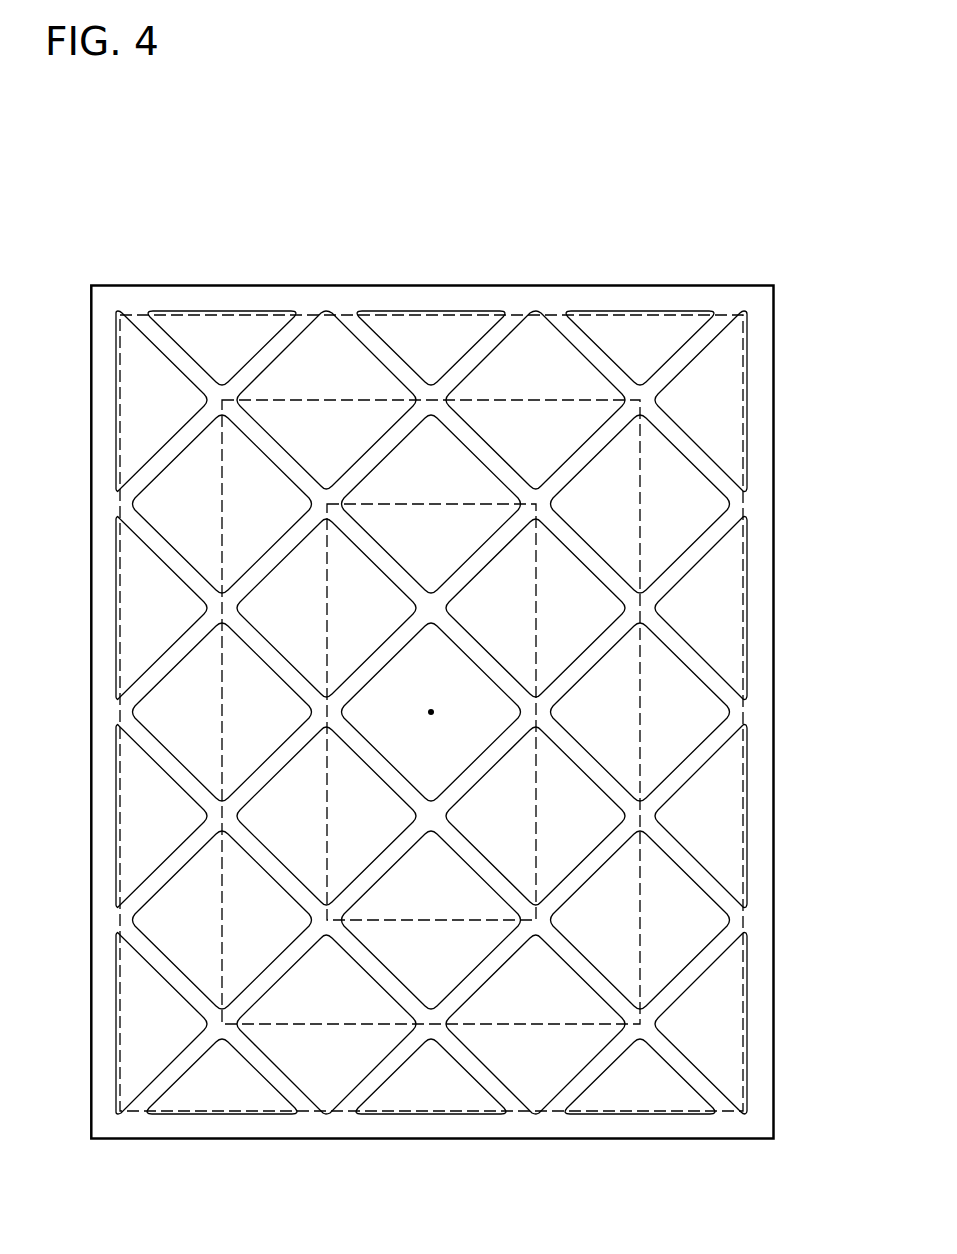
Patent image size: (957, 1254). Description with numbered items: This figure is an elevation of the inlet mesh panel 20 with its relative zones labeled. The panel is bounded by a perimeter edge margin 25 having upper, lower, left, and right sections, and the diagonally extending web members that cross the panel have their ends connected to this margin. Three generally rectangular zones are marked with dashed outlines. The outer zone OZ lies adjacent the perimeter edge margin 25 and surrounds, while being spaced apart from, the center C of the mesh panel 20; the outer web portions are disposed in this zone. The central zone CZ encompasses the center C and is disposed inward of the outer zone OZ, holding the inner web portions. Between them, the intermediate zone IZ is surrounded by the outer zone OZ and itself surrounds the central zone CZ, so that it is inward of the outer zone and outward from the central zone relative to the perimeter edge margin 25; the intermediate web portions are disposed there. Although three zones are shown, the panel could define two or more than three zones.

The inlet mesh panel 20 is at (705, 187).
The perimeter edge margin 25 is at (234, 298).
The outer zone OZ is at (535, 356).
The intermediate zone IZ is at (617, 497).
The central zone CZ is at (357, 605).
The center C is at (431, 712).